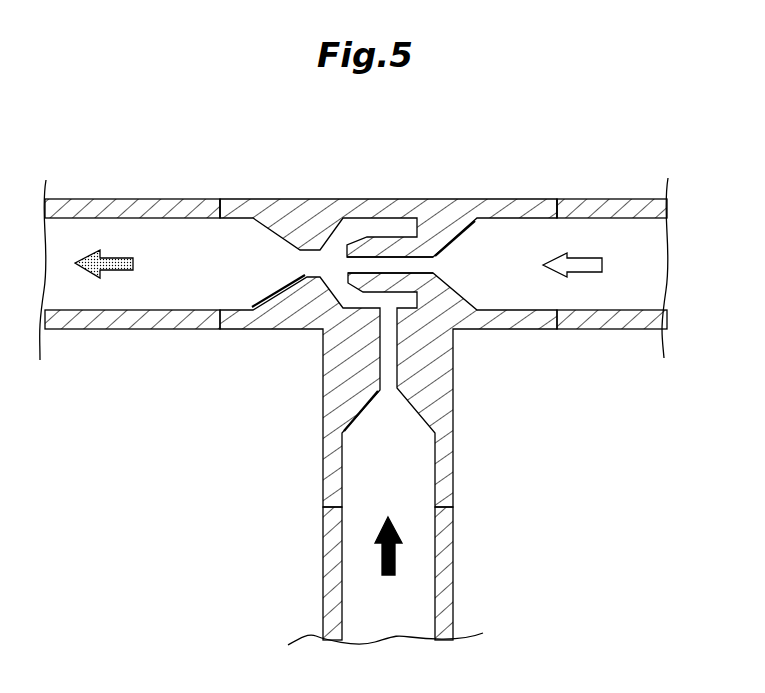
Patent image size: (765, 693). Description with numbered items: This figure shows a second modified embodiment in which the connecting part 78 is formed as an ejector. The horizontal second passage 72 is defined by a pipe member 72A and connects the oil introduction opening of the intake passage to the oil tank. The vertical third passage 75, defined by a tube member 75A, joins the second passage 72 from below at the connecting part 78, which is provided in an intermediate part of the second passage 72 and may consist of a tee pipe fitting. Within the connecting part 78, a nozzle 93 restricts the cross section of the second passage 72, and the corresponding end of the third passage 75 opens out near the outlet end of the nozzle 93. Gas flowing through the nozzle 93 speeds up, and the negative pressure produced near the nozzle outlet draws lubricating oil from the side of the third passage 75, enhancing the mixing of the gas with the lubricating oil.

The second passage 72 is at (354, 272).
The pipe member 72A is at (127, 207).
The connecting part 78 is at (283, 209).
The nozzle 93 is at (388, 278).
The third passage 75 is at (414, 576).
The tube member 75A is at (443, 547).